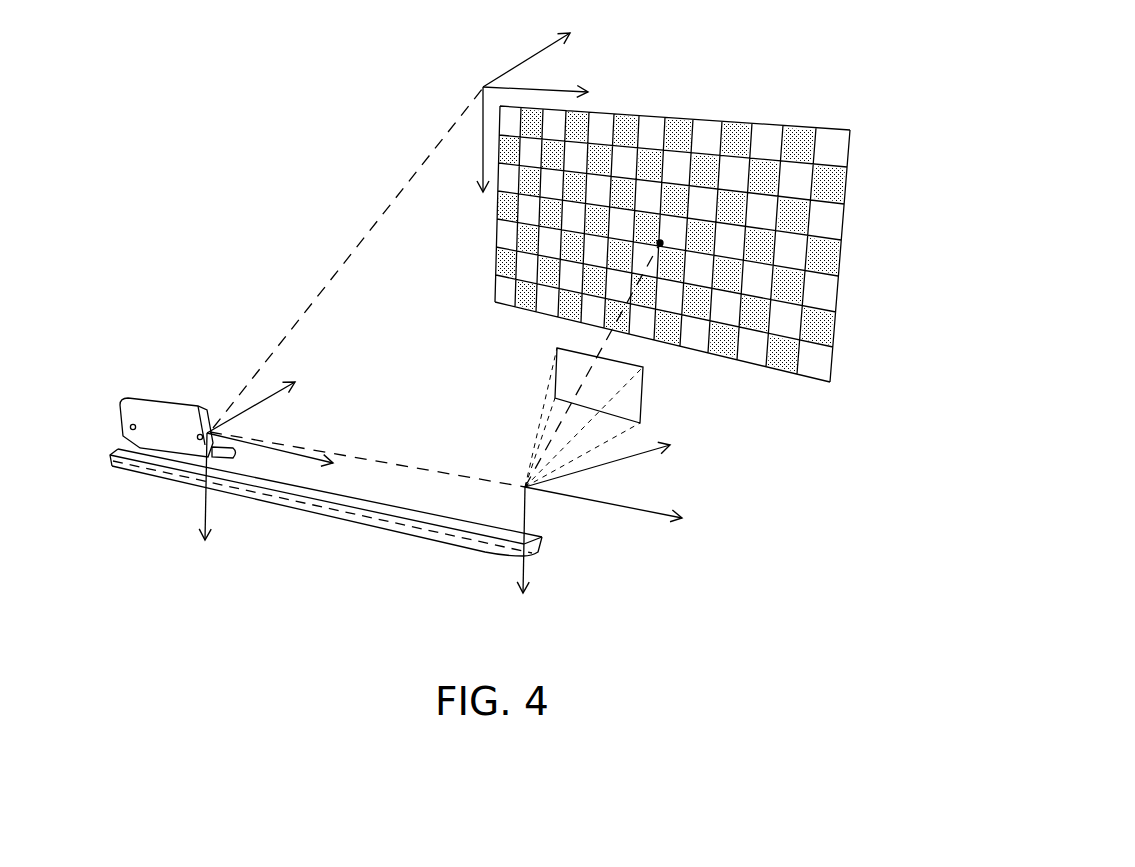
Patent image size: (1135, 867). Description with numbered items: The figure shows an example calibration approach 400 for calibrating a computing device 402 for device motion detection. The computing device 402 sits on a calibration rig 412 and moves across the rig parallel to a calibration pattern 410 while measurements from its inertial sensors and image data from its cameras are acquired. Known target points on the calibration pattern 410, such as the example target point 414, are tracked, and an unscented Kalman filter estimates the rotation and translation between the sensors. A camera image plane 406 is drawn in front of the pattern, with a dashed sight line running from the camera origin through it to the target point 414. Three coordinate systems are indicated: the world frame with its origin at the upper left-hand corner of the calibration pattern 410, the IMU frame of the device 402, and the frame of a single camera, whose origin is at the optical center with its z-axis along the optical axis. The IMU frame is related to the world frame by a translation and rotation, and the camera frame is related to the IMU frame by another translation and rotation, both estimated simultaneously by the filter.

The calibration system 400 is at (167, 125).
The computing device 402 is at (163, 398).
The image plane 406 is at (663, 418).
The calibration pattern 410 is at (778, 98).
The calibration rig 412 is at (372, 547).
The target point 414 is at (670, 233).